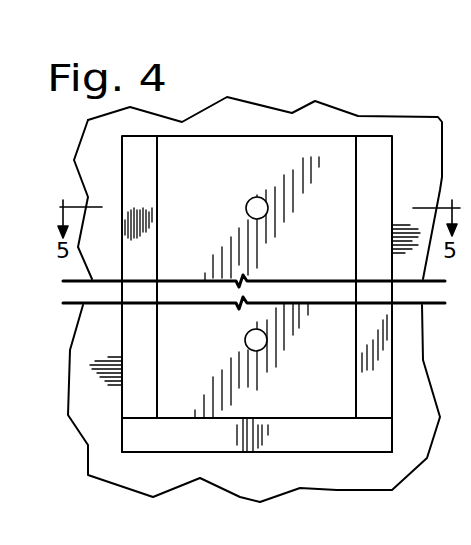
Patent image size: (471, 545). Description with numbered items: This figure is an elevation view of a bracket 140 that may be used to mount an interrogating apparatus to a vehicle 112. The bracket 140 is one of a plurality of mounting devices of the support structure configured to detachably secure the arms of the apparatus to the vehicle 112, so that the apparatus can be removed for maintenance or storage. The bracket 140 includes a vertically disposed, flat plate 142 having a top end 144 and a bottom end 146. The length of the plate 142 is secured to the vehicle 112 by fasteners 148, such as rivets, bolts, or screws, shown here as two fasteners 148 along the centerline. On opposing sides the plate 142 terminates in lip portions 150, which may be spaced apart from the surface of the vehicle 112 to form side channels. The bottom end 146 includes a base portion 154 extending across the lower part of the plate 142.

The vehicle 112 is at (435, 180).
The bracket 140 is at (104, 333).
The plate 142 is at (212, 168).
The top end 144 is at (328, 134).
The bottom end 146 is at (282, 455).
The fasteners 148 is at (245, 337).
The lip portions 150 is at (145, 264).
The base portion 154 is at (185, 445).